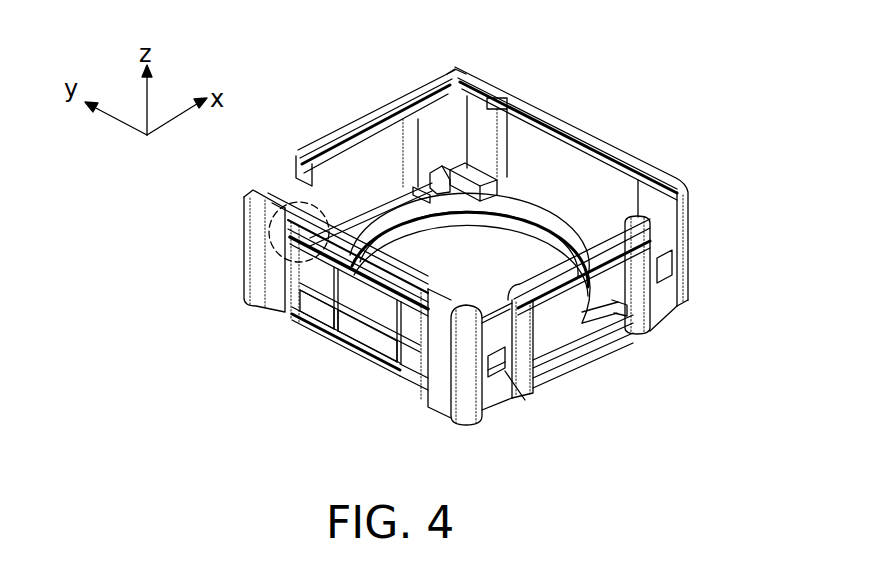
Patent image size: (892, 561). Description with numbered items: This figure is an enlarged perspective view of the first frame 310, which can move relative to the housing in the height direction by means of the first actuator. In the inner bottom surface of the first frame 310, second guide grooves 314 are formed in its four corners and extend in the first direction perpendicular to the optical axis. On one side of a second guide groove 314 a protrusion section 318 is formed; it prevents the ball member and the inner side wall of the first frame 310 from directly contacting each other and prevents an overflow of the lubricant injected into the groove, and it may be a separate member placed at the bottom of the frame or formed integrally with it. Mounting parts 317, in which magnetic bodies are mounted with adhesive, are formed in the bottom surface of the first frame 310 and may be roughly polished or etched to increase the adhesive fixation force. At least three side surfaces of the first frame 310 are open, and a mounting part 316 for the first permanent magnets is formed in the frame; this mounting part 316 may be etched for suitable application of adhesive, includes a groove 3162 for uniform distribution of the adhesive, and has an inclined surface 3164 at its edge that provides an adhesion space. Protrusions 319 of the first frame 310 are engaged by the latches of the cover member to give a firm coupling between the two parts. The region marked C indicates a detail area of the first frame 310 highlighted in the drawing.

The first frame 310 is at (674, 116).
The second guide groove 314 is at (483, 164).
The mounting part 316 is at (357, 328).
The groove 3162 is at (382, 330).
The inclined surface 3164 is at (283, 323).
The mounting part 317 is at (377, 196).
The protrusion section 318 is at (463, 164).
The protrusion 319 is at (525, 400).
The detail region C is at (250, 257).